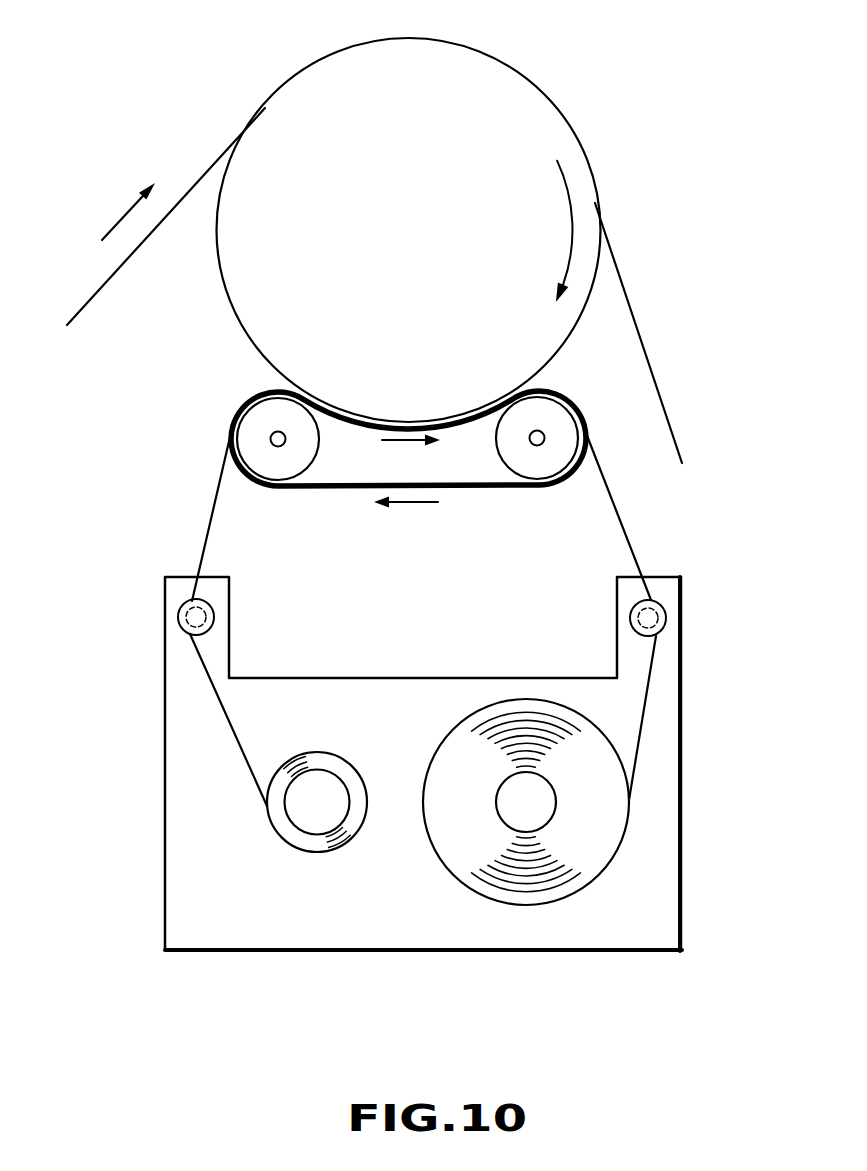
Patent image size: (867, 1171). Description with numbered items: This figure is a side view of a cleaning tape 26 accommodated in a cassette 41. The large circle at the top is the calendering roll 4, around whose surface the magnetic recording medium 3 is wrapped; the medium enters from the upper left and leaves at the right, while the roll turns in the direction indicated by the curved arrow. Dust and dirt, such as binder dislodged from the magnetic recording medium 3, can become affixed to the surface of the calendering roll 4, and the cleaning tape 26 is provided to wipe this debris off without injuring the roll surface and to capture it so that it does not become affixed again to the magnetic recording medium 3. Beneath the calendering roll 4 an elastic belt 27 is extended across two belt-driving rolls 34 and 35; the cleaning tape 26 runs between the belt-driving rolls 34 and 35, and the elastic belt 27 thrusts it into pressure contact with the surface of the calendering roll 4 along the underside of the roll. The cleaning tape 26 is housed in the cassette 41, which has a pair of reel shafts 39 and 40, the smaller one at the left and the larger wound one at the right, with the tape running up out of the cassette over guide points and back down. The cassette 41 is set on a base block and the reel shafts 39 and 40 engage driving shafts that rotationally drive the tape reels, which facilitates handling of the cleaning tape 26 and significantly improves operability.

The magnetic recording medium 3 is at (102, 282).
The calendering roll 4 is at (303, 92).
The cleaning tape 26 is at (203, 533).
The elastic belt 27 is at (338, 491).
The belt-driving roll 34 is at (238, 428).
The belt-driving roll 35 is at (574, 429).
The reel shaft 39 is at (318, 817).
The reel shaft 40 is at (547, 802).
The cassette 41 is at (445, 930).